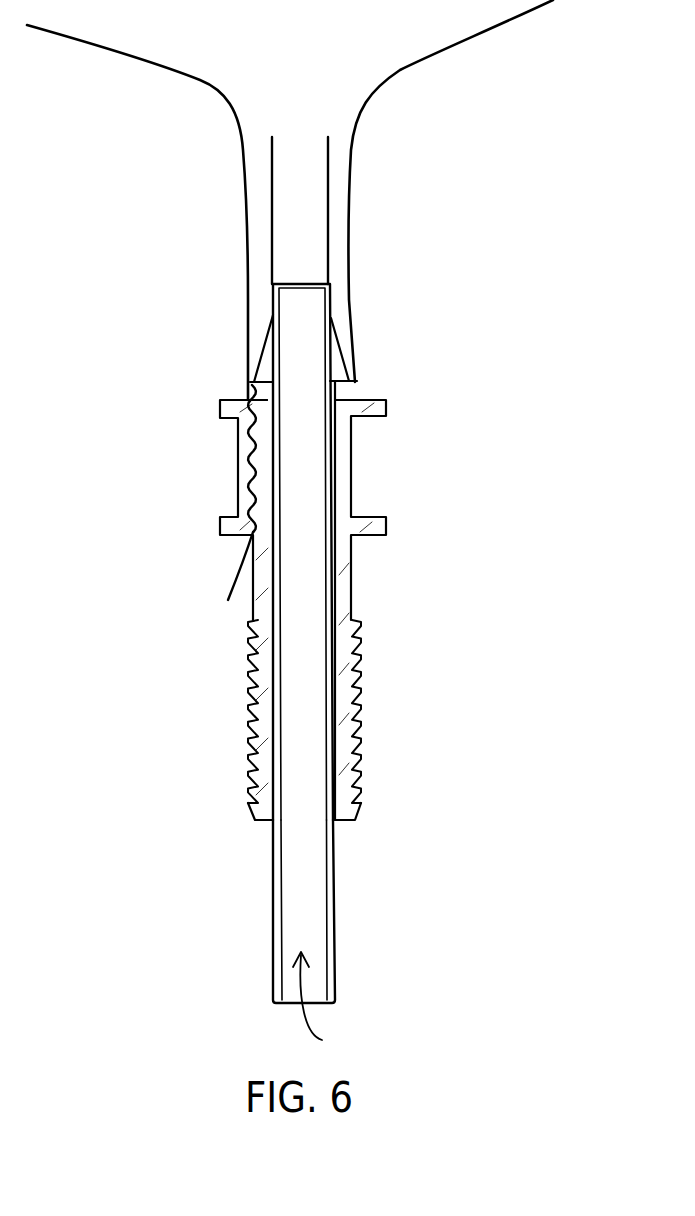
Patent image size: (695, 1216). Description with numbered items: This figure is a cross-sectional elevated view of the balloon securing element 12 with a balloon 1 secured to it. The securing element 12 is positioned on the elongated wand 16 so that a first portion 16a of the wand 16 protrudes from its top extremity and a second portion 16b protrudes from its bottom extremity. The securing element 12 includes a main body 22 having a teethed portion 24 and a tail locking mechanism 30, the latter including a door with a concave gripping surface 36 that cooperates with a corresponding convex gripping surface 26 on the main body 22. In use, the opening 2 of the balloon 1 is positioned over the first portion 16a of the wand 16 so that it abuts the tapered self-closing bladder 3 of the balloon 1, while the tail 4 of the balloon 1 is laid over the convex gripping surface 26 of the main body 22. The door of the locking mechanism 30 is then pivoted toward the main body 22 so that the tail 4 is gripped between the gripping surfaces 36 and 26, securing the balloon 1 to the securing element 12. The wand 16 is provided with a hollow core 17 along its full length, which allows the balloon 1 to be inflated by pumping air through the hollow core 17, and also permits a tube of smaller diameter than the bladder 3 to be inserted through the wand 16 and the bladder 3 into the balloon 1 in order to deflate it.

The balloon 1 is at (547, 5).
The tapered self-closing bladder 3 is at (308, 172).
The first portion of the wand 16a is at (328, 342).
The opening of the balloon 2 is at (337, 376).
The elongated wand 16 is at (282, 707).
The second portion of the wand 16b is at (335, 890).
The balloon securing element 12 is at (393, 601).
The main body 22 is at (340, 572).
The teethed portion 24 is at (357, 757).
The convex gripping surface 26 is at (253, 452).
The tail locking mechanism 30 is at (176, 472).
The concave gripping surface 36 is at (252, 479).
The tail of the balloon 4 is at (237, 558).
The hollow core 17 is at (330, 1004).